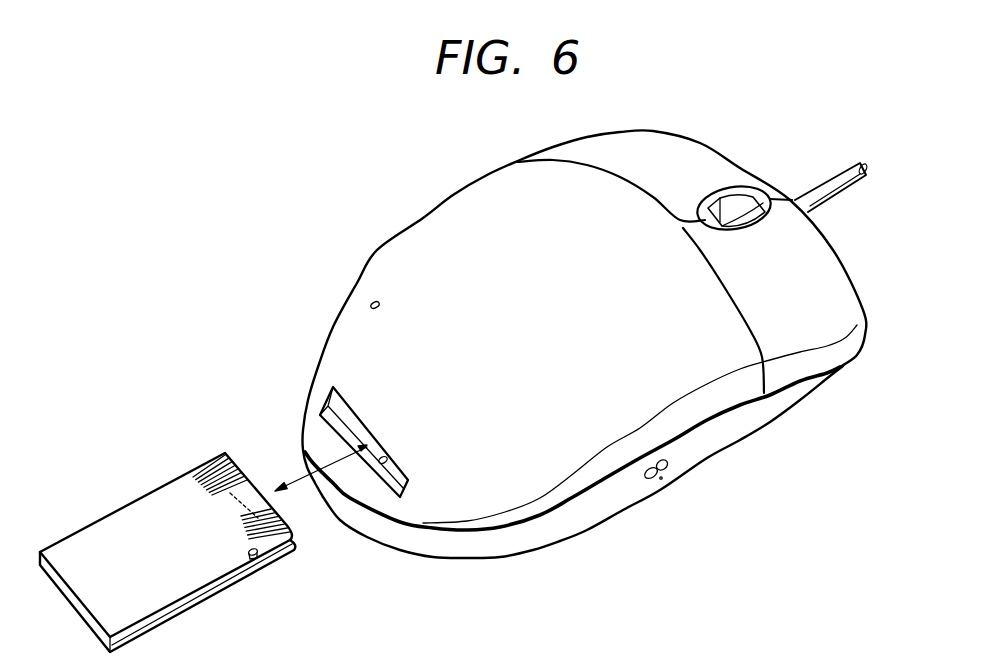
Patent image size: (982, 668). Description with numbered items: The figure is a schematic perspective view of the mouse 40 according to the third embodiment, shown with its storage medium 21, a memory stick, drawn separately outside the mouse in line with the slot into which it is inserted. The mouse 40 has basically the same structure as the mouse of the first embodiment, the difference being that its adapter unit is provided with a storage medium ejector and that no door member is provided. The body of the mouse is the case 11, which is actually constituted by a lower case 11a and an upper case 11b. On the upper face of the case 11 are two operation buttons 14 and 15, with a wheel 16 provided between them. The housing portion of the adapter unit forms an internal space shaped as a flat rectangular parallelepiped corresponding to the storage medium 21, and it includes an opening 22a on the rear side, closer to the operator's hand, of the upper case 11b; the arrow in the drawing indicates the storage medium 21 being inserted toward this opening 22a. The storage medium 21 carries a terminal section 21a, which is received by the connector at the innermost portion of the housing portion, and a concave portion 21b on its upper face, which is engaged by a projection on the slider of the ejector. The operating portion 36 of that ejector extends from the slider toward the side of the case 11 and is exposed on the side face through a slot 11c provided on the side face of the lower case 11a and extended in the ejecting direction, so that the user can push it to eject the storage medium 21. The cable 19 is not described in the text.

The mouse 40 is at (399, 215).
The operation button 14 is at (633, 145).
The operation button 15 is at (800, 335).
The wheel 16 is at (737, 200).
The cable 19 is at (828, 183).
The case 11 is at (613, 600).
The lower case 11a is at (530, 540).
The upper case 11b is at (575, 488).
The slot 11c is at (660, 478).
The operating portion 36 is at (667, 463).
The opening 22a is at (390, 462).
The storage medium 21 is at (105, 532).
The terminal section 21a is at (210, 470).
The concave portion 21b is at (260, 563).